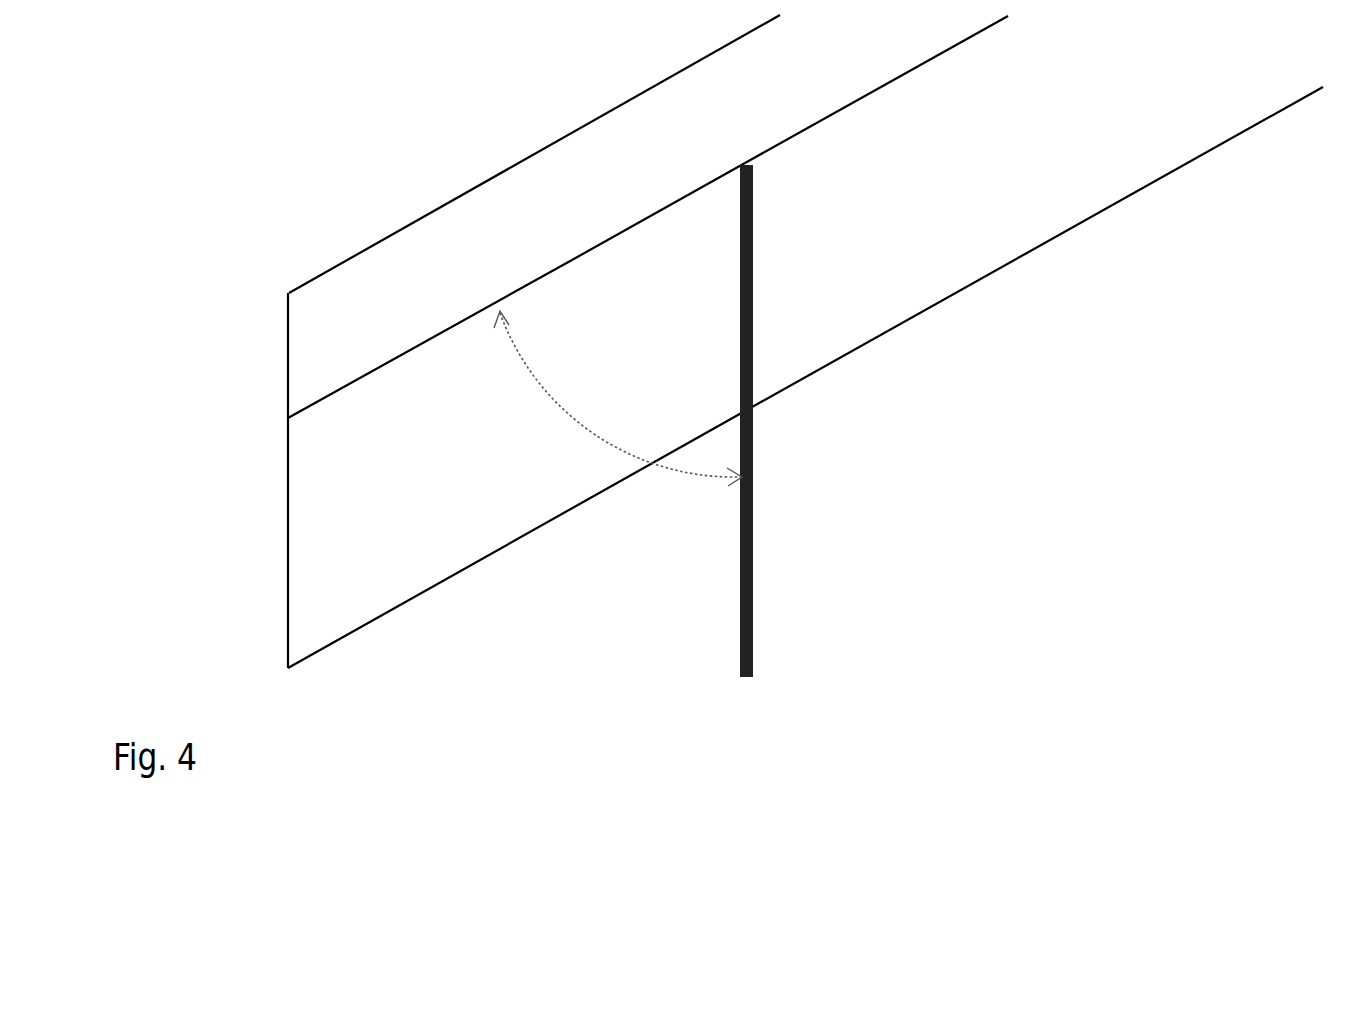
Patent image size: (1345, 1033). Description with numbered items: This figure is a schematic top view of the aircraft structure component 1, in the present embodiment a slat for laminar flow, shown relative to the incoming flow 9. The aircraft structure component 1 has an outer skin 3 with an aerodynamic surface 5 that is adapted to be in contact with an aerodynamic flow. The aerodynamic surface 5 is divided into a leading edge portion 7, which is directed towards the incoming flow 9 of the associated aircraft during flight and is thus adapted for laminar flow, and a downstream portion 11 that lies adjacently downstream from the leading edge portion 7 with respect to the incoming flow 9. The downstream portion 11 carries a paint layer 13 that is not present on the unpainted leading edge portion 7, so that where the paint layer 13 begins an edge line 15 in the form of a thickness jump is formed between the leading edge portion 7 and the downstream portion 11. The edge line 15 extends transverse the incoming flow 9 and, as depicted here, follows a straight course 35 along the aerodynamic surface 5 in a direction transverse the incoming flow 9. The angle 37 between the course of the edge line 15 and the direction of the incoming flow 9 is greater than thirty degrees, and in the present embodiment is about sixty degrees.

The aircraft structure component 1 is at (1007, 230).
The outer skin 3 is at (1062, 136).
The aerodynamic surface 5 is at (860, 253).
The leading edge portion 7 is at (427, 498).
The incoming flow 9 is at (748, 518).
The downstream portion 11 is at (343, 358).
The paint layer 13 is at (357, 283).
The edge line 15 is at (413, 347).
The straight course 35 is at (572, 260).
The angle 37 is at (557, 403).